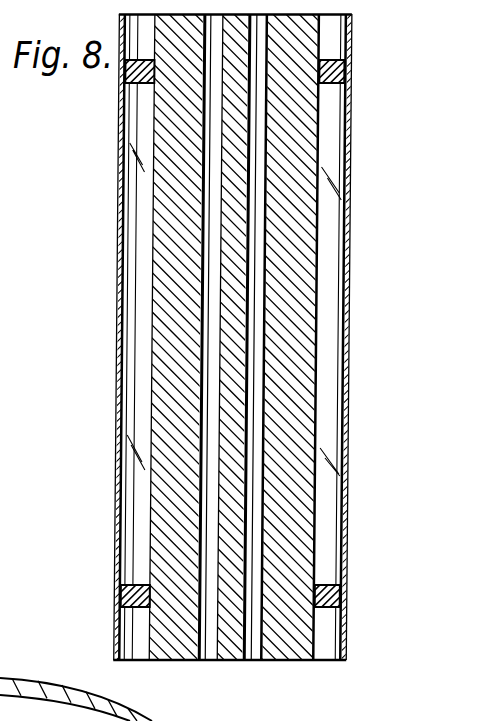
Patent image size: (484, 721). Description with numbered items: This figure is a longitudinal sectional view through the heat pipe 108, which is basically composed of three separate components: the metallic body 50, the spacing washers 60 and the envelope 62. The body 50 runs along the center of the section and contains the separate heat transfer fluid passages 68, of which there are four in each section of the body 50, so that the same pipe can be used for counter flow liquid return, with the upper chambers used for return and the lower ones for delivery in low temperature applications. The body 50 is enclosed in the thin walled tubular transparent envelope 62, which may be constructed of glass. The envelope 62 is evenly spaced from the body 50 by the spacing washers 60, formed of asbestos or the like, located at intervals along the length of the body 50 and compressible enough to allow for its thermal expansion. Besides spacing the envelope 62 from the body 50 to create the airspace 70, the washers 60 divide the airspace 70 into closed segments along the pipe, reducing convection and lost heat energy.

The heat pipe 108 is at (362, 240).
The envelope 62 is at (115, 573).
The metallic body 50 is at (285, 425).
The heat transfer fluid passages 68 is at (255, 138).
The airspace 70 is at (143, 188).
The spacing washers 60 is at (128, 83).